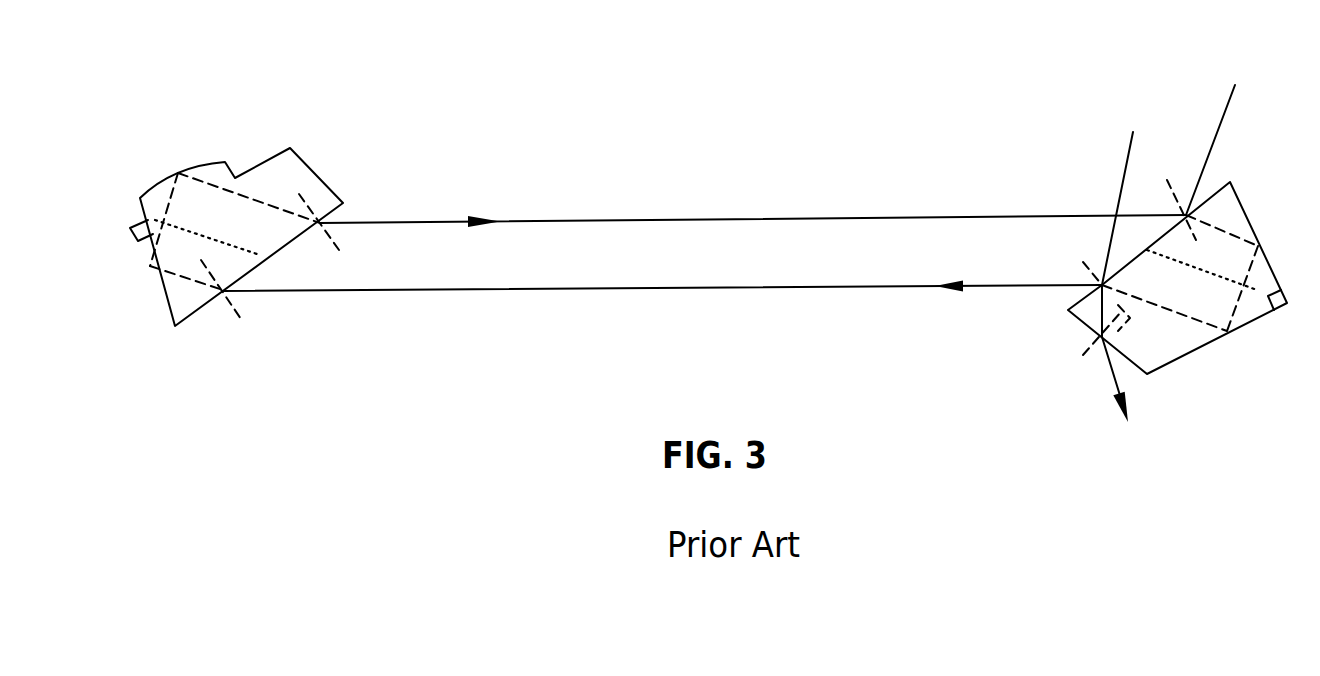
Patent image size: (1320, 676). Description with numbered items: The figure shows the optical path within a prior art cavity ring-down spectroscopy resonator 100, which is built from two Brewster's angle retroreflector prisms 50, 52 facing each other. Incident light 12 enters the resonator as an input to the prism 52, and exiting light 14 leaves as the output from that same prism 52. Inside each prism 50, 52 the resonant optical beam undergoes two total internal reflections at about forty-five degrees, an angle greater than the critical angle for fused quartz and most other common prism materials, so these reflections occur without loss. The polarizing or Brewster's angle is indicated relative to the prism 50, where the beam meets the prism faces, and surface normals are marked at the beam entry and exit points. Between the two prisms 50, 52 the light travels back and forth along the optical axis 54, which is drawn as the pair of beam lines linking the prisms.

The CRDS resonator 100 is at (880, 72).
The Brewster's angle retroreflector prism 50 is at (318, 171).
The Brewster's angle retroreflector prism 52 is at (1244, 208).
The optical axis 54 is at (755, 218).
The incident light 12 is at (1124, 168).
The exiting light 14 is at (1224, 107).